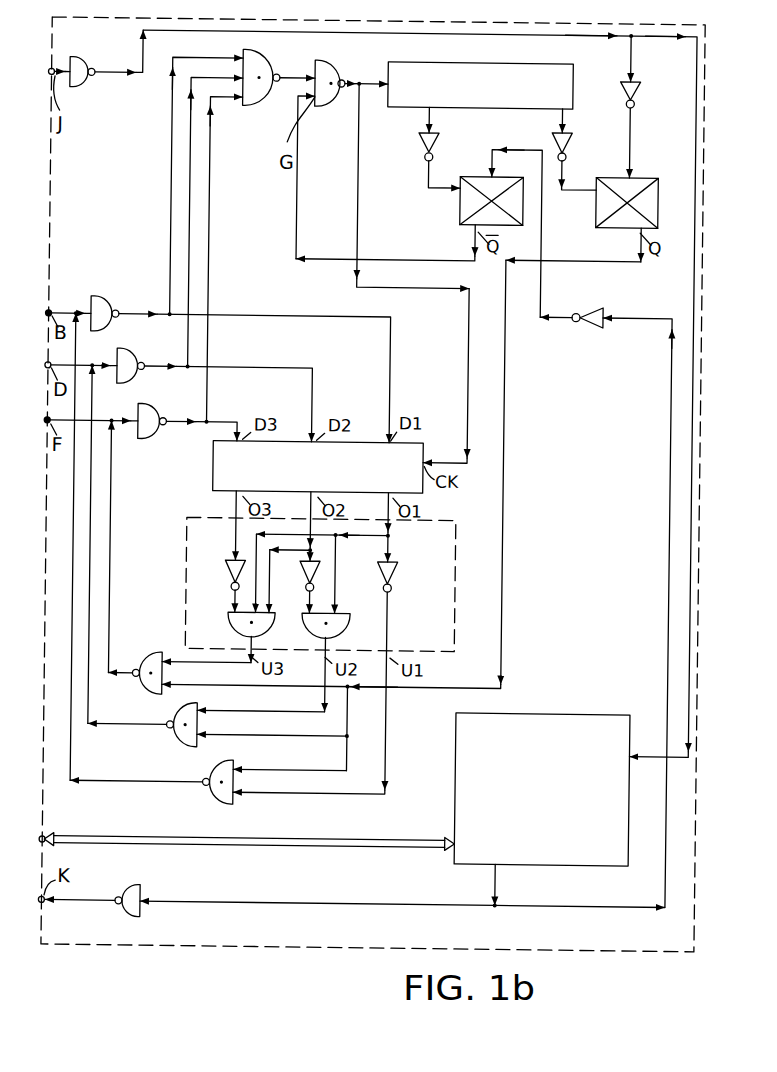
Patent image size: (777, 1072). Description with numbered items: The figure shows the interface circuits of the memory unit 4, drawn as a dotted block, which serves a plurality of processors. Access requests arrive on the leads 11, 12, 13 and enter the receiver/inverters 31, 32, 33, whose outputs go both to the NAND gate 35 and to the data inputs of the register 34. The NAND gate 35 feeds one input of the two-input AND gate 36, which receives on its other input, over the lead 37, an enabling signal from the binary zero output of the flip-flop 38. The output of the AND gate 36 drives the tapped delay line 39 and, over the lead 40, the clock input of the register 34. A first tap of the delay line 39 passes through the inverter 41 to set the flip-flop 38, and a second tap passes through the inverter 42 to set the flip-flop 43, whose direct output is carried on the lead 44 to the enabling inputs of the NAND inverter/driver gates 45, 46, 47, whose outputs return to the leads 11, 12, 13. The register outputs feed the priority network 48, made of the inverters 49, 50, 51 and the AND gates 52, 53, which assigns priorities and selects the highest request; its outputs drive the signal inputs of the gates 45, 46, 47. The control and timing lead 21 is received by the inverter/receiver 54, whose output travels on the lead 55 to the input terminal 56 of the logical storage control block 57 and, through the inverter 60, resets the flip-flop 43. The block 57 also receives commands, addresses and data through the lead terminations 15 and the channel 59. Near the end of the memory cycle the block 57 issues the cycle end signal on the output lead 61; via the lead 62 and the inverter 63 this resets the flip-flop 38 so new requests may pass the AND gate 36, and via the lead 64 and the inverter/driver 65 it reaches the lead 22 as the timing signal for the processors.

The memory unit 4 is at (372, 506).
The lead 11 is at (70, 292).
The lead 12 is at (81, 384).
The lead 13 is at (91, 443).
The lead terminations 15 is at (62, 823).
The control and timing lead 21 is at (70, 50).
The lead 22 is at (55, 917).
The receiver/inverter 31 is at (240, 355).
The receiver/inverter 32 is at (214, 386).
The receiver/inverter 33 is at (188, 410).
The register 34 is at (296, 501).
The NAND gate 35 is at (240, 236).
The two-input AND gate 36 is at (348, 105).
The lead 37 is at (315, 177).
The flip-flop 38 is at (418, 232).
The tapped delay line 39 is at (481, 71).
The lead 40 is at (413, 274).
The inverter 41 is at (421, 147).
The inverter 42 is at (581, 150).
The flip-flop 43 is at (593, 201).
The lead 44 is at (366, 472).
The NAND inverter/driver gate 45 is at (209, 573).
The NAND inverter/driver gate 46 is at (219, 566).
The NAND inverter/driver gate 47 is at (135, 557).
The priority network 48 is at (298, 584).
The inverter 49 is at (216, 586).
The inverter 50 is at (298, 587).
The inverter 51 is at (333, 677).
The AND gate 52 is at (276, 597).
The AND gate 53 is at (286, 621).
The inverter/receiver 54 is at (106, 71).
The lead 55 is at (415, 391).
The input terminal 56 is at (657, 777).
The logical storage control block 57 is at (542, 768).
The channel 59 is at (249, 859).
The inverter 60 is at (646, 106).
The output lead 61 is at (511, 884).
The lead 62 is at (634, 612).
The inverter 63 is at (572, 339).
The lead 64 is at (402, 891).
The inverter/driver 65 is at (111, 893).